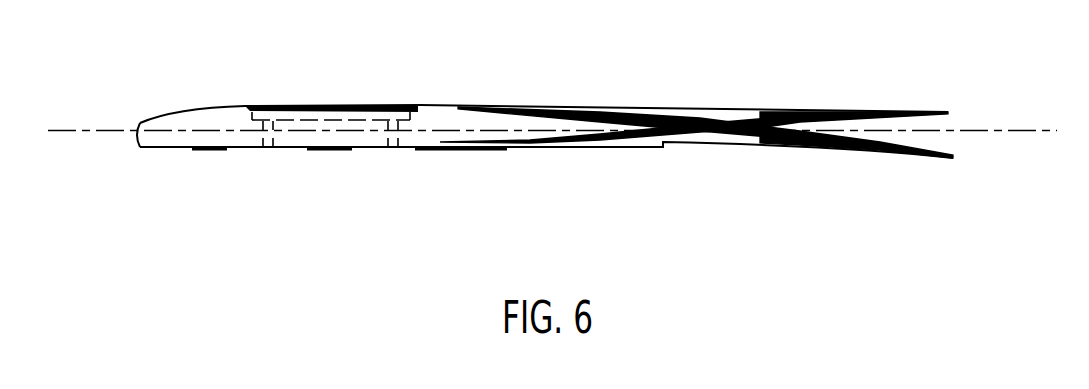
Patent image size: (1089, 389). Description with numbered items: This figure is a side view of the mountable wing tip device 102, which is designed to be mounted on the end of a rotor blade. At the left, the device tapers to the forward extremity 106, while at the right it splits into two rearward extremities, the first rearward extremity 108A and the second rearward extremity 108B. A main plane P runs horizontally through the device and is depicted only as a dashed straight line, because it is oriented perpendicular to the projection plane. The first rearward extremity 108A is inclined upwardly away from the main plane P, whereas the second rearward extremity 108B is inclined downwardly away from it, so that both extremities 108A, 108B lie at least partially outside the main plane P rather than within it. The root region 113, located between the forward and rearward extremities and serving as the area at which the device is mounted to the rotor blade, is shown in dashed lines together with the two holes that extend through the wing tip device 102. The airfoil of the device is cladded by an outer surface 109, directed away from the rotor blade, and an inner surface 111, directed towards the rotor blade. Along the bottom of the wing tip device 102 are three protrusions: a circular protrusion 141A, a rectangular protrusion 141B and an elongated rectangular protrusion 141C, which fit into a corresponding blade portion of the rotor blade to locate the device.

The forward extremity 106 is at (157, 120).
The mountable wing tip device 102 is at (268, 167).
The root region 113 is at (352, 117).
The outer surface 109 is at (445, 105).
The inner surface 111 is at (587, 148).
The first rearward extremity 108A is at (923, 110).
The second rearward extremity 108B is at (930, 158).
The circular protrusion 141A is at (203, 157).
The rectangular protrusion 141B is at (322, 157).
The elongated rectangular protrusion 141C is at (455, 157).
The main plane P is at (1023, 128).